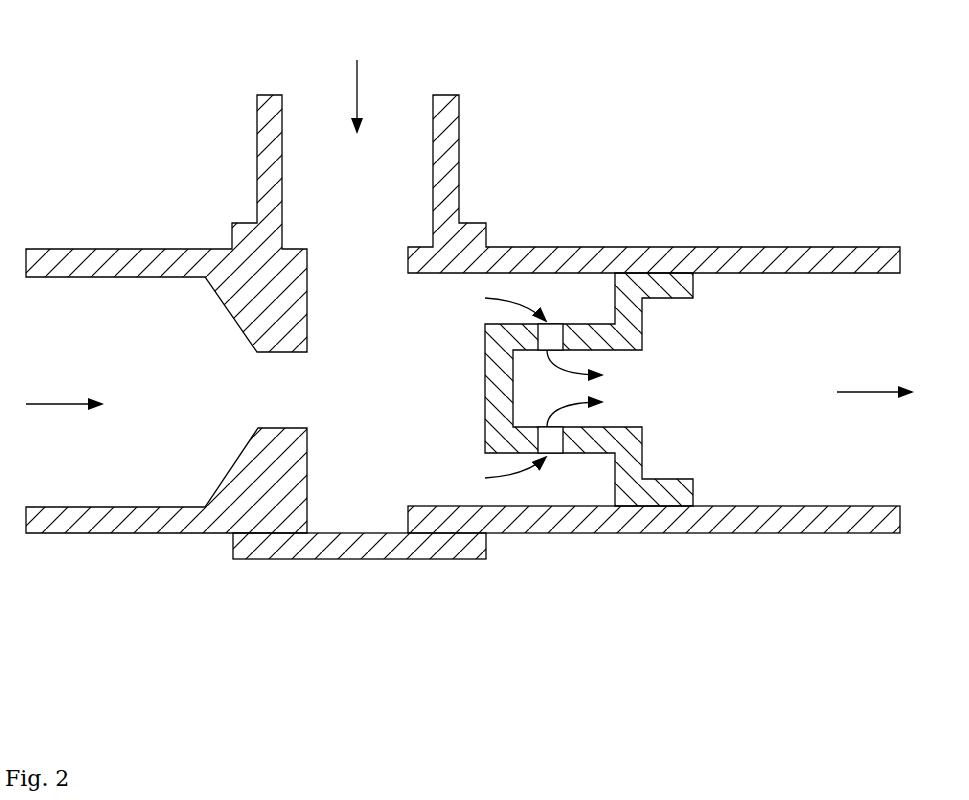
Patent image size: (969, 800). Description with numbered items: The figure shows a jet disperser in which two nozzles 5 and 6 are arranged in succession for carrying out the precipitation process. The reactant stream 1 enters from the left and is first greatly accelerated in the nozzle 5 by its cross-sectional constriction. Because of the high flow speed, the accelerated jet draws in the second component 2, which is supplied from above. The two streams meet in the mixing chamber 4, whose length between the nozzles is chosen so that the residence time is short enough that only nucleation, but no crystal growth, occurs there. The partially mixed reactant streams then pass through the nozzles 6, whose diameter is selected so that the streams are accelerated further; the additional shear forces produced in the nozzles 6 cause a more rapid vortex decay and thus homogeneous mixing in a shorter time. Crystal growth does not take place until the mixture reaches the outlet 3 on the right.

The reactant stream 1 is at (64, 382).
The second component 2 is at (373, 96).
The outlet 3 is at (874, 371).
The mixing chamber 4 is at (383, 400).
The nozzle 5 is at (272, 387).
The nozzles 6 is at (553, 340).